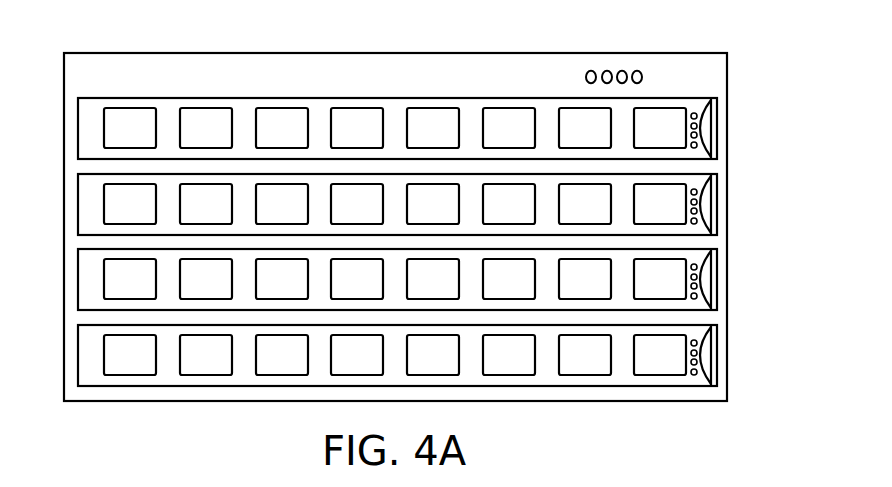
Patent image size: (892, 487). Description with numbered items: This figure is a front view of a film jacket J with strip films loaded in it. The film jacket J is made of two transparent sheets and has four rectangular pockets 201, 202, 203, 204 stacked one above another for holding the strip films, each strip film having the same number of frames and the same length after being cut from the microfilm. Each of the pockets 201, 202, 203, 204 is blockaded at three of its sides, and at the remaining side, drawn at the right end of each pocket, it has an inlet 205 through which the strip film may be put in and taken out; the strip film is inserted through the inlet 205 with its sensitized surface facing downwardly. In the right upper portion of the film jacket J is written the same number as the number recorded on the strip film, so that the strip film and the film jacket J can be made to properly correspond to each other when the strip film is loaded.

The film jacket J is at (660, 53).
The first rectangular pocket 201 is at (86, 131).
The second rectangular pocket 202 is at (84, 215).
The third rectangular pocket 203 is at (84, 292).
The fourth rectangular pocket 204 is at (84, 362).
The inlet 205 is at (708, 133).